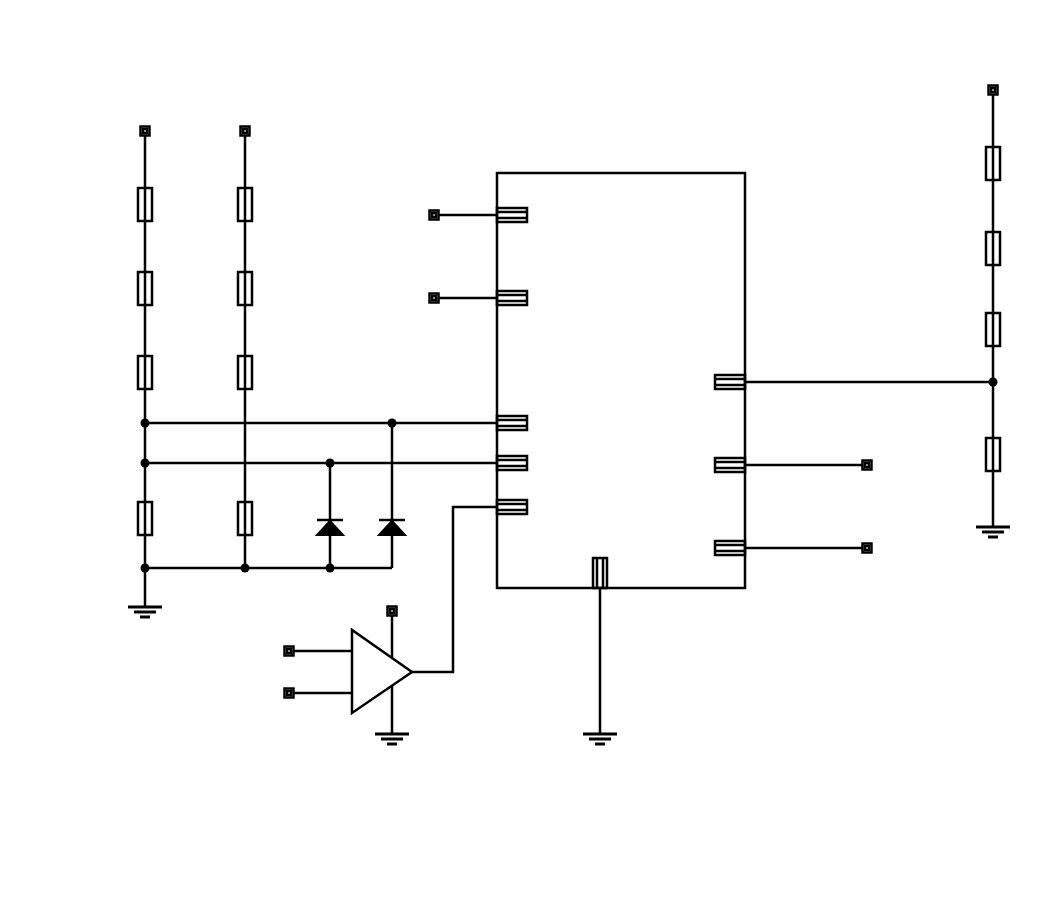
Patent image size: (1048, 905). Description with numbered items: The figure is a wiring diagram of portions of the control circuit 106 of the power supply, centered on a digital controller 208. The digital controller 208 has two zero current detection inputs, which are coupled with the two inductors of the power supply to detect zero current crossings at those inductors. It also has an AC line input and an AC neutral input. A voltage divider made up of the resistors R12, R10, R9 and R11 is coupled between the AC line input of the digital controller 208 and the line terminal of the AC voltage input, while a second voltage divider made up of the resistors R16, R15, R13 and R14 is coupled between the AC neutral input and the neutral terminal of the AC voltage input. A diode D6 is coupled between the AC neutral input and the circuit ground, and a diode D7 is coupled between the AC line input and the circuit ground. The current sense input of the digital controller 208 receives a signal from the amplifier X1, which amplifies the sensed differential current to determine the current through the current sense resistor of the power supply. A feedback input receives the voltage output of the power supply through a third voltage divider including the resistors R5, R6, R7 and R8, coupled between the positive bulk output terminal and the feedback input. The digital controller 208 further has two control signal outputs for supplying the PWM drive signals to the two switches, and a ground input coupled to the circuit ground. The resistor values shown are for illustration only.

The control circuit 106 is at (823, 56).
The digital controller 208 is at (745, 215).
The resistor R5 is at (967, 154).
The resistor R6 is at (967, 239).
The resistor R7 is at (967, 320).
The resistor R8 is at (970, 445).
The resistor R9 is at (120, 363).
The resistor R10 is at (120, 280).
The resistor R11 is at (123, 510).
The resistor R12 is at (120, 196).
The resistor R13 is at (220, 363).
The resistor R14 is at (223, 510).
The resistor R15 is at (220, 280).
The resistor R16 is at (220, 196).
The diode D6 is at (318, 515).
The diode D7 is at (380, 495).
The amplifier X1 is at (331, 663).